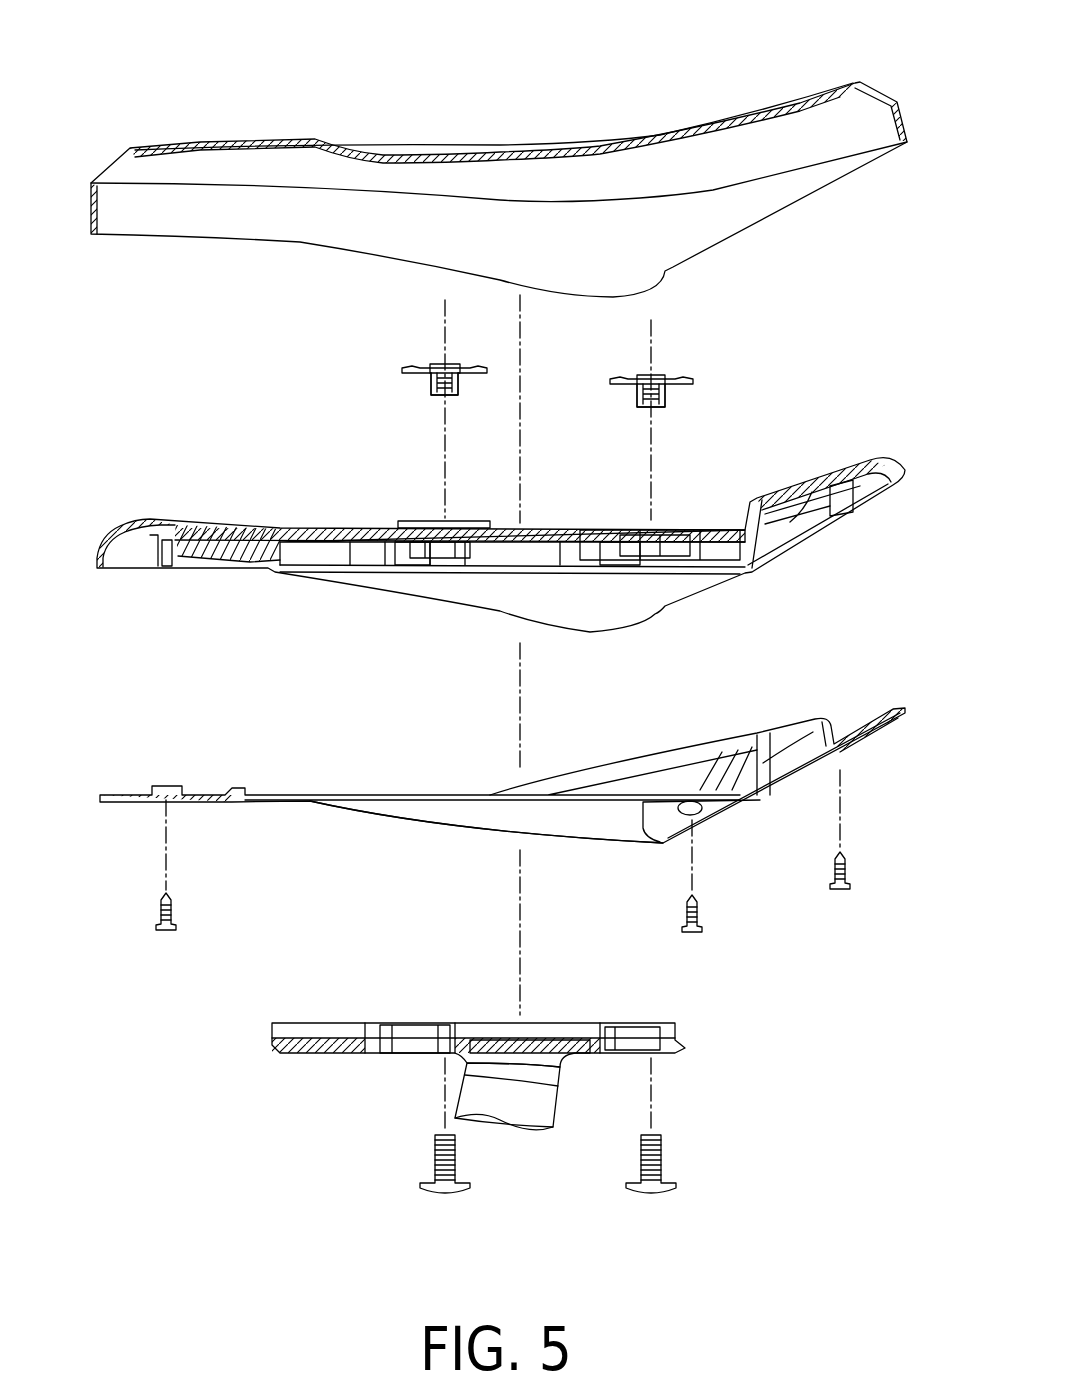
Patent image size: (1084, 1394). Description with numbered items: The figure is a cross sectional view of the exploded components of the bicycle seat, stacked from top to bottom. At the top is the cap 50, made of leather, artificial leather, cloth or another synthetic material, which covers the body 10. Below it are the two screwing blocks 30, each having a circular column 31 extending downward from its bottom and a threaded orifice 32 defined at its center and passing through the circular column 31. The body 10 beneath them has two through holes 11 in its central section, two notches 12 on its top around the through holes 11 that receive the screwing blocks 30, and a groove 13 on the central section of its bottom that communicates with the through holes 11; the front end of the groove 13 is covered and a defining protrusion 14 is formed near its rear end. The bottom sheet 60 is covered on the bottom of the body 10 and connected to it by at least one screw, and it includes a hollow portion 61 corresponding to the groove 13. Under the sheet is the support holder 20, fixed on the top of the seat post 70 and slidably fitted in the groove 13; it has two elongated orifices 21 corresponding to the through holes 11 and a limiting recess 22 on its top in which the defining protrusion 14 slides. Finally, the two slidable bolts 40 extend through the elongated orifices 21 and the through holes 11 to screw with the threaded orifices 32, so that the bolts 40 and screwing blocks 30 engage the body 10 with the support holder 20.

The body 10 is at (501, 528).
The through holes 11 is at (462, 540).
The notches 12 is at (418, 521).
The groove 13 is at (408, 560).
The defining protrusion 14 is at (617, 545).
The support holder 20 is at (478, 973).
The elongated orifices 21 is at (412, 1038).
The limiting recess 22 is at (558, 1030).
The screwing blocks 30 is at (398, 367).
The circular columns 31 is at (432, 386).
The threaded orifices 32 is at (441, 368).
The slidable bolts 40 is at (432, 1157).
The cap 50 is at (506, 148).
The bottom sheet 60 is at (250, 786).
The hollow portion 61 is at (453, 797).
The seat post 70 is at (510, 1133).